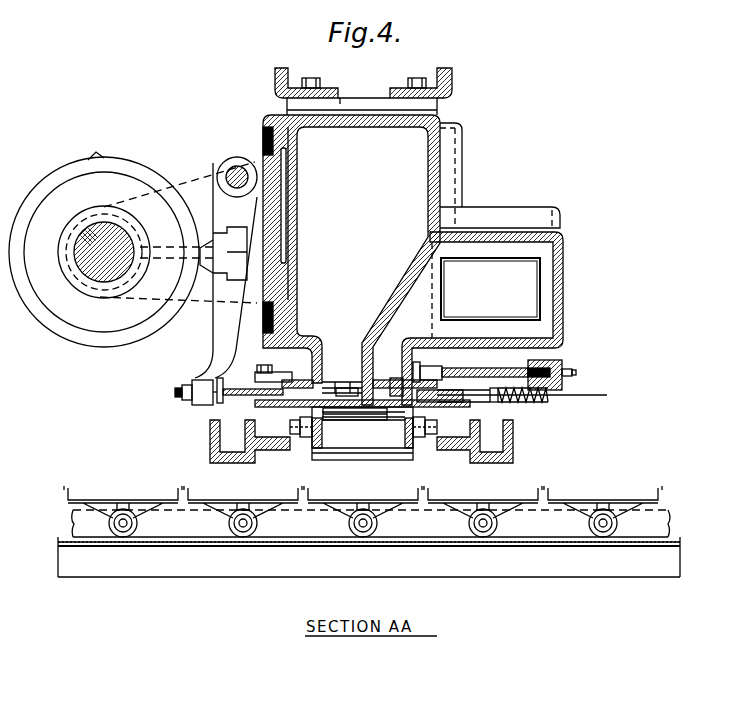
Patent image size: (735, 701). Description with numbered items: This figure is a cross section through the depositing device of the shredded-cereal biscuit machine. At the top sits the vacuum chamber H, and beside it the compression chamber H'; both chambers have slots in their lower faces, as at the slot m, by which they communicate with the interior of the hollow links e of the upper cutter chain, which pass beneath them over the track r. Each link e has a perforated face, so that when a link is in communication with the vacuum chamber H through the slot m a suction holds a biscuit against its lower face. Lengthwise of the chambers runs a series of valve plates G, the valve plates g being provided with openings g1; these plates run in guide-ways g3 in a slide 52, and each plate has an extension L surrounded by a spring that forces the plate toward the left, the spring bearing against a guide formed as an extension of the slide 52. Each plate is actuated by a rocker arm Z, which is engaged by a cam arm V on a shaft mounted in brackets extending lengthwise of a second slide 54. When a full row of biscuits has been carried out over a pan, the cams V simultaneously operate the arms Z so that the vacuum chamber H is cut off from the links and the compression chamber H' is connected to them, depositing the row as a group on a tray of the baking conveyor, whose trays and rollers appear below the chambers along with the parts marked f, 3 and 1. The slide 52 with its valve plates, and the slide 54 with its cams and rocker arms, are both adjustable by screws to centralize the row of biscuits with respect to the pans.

The cam arm V is at (42, 190).
The slide 54 is at (263, 158).
The rocker arm Z is at (220, 322).
The vacuum chamber H is at (351, 260).
The compression chamber H' is at (482, 318).
The valve plate openings g1 is at (338, 392).
The slot m is at (350, 390).
The slide 52 is at (253, 388).
The valve plate G is at (463, 398).
The plate extension L is at (535, 400).
The track r is at (283, 445).
The link e is at (343, 443).
The base plate f is at (352, 418).
The valve plate g is at (398, 413).
The guide-way g3 is at (413, 413).
The moulds 3 is at (86, 500).
The conveyor track 1 is at (185, 530).